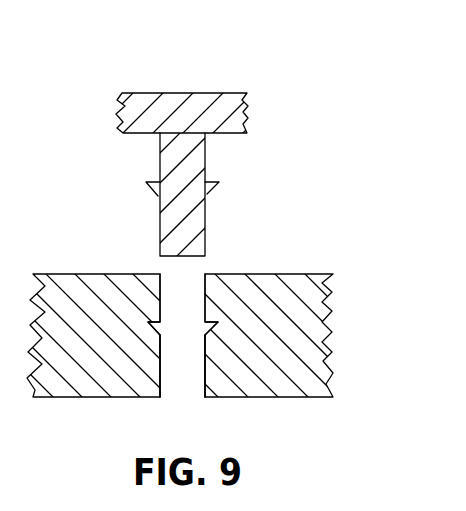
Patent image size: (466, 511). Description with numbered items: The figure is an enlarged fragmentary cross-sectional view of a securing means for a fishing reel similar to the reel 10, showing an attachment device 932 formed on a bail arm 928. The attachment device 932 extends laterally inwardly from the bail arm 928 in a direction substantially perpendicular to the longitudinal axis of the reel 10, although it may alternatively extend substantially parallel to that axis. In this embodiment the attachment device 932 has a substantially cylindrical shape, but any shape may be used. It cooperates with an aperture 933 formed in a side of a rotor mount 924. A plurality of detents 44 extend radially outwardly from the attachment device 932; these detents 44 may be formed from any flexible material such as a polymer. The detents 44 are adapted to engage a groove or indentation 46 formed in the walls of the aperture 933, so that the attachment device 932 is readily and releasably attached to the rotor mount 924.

The reel 10 is at (232, 240).
The detents 44 is at (152, 188).
The groove or indentation 46 is at (202, 305).
The rotor mount 924 is at (304, 358).
The bail arm 928 is at (218, 100).
The attachment device 932 is at (160, 232).
The aperture 933 is at (178, 397).